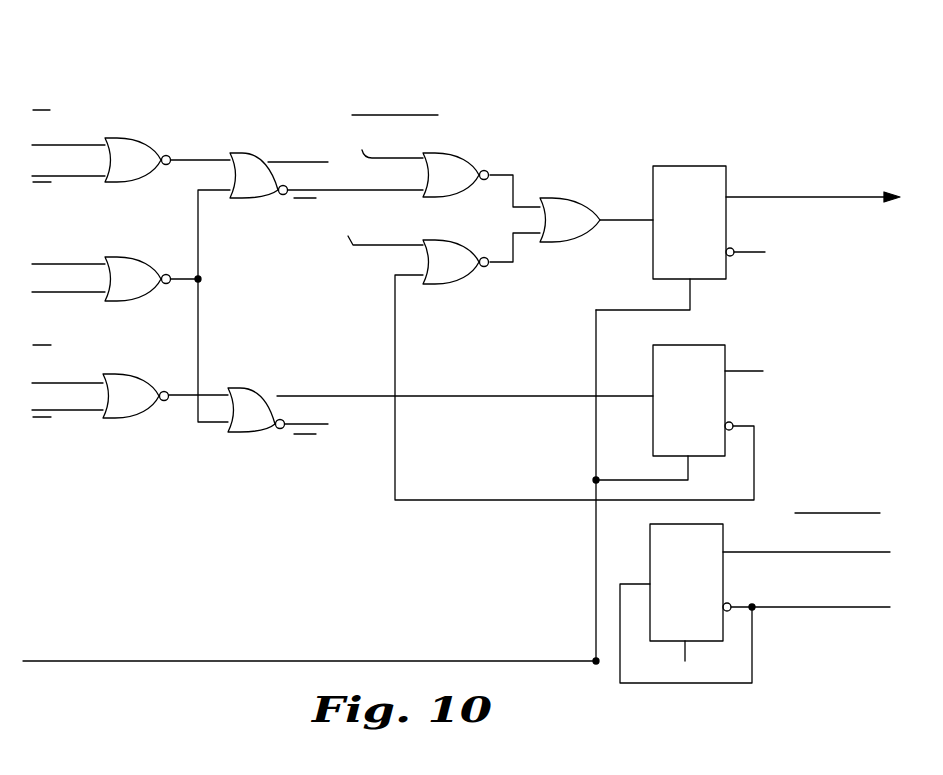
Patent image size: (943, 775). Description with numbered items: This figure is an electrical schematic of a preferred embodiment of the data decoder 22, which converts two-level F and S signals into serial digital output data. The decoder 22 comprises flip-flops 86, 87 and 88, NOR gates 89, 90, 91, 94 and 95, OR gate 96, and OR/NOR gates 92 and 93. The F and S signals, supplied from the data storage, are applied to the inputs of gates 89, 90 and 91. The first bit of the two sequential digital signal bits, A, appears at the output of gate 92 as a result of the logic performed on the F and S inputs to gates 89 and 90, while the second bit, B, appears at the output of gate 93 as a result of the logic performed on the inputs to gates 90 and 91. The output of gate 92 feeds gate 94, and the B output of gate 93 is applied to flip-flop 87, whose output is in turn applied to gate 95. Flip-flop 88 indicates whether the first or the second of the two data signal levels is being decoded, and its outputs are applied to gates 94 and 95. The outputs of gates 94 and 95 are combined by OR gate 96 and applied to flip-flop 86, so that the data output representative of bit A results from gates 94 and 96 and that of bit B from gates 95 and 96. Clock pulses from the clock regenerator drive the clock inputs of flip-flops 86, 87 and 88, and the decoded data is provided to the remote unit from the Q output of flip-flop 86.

The data decoder 22 is at (658, 58).
The flip-flop 86 is at (695, 166).
The flip-flop 87 is at (700, 345).
The flip-flop 88 is at (650, 540).
The NOR gate 89 is at (120, 138).
The NOR gate 90 is at (128, 256).
The NOR gate 91 is at (125, 374).
The OR/NOR gate 92 is at (240, 153).
The OR/NOR gate 93 is at (240, 388).
The NOR gate 94 is at (455, 152).
The NOR gate 95 is at (450, 238).
The OR gate 96 is at (560, 198).